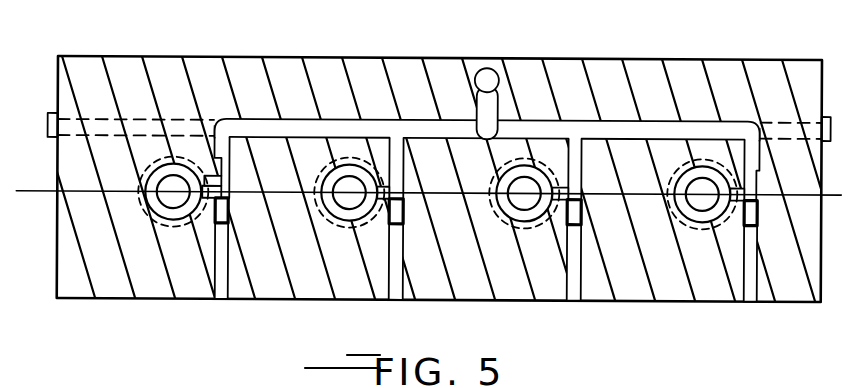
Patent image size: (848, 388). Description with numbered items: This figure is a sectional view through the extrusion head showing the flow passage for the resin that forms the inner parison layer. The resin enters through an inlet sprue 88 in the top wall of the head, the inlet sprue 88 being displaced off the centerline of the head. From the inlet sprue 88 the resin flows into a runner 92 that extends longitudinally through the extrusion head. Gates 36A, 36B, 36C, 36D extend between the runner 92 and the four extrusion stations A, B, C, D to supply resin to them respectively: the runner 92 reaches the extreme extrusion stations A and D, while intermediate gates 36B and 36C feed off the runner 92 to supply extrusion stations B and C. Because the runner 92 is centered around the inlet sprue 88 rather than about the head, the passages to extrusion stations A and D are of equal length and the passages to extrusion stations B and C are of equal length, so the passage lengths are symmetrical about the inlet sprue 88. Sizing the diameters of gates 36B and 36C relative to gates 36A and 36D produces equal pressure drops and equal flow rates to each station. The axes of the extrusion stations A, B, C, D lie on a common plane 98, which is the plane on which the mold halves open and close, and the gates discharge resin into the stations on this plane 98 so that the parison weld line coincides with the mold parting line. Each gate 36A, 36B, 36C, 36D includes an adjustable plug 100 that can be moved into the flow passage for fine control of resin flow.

The gate 36A is at (760, 160).
The gate 36B is at (585, 165).
The gate 36C is at (402, 160).
The gate 36D is at (214, 158).
The runner 92 is at (300, 118).
The inlet sprue 88 is at (498, 75).
The common plane 98 is at (38, 193).
The adjustable plug 100 is at (228, 212).
The extrusion station A is at (703, 222).
The extrusion station B is at (526, 220).
The extrusion station C is at (349, 220).
The extrusion station D is at (173, 220).